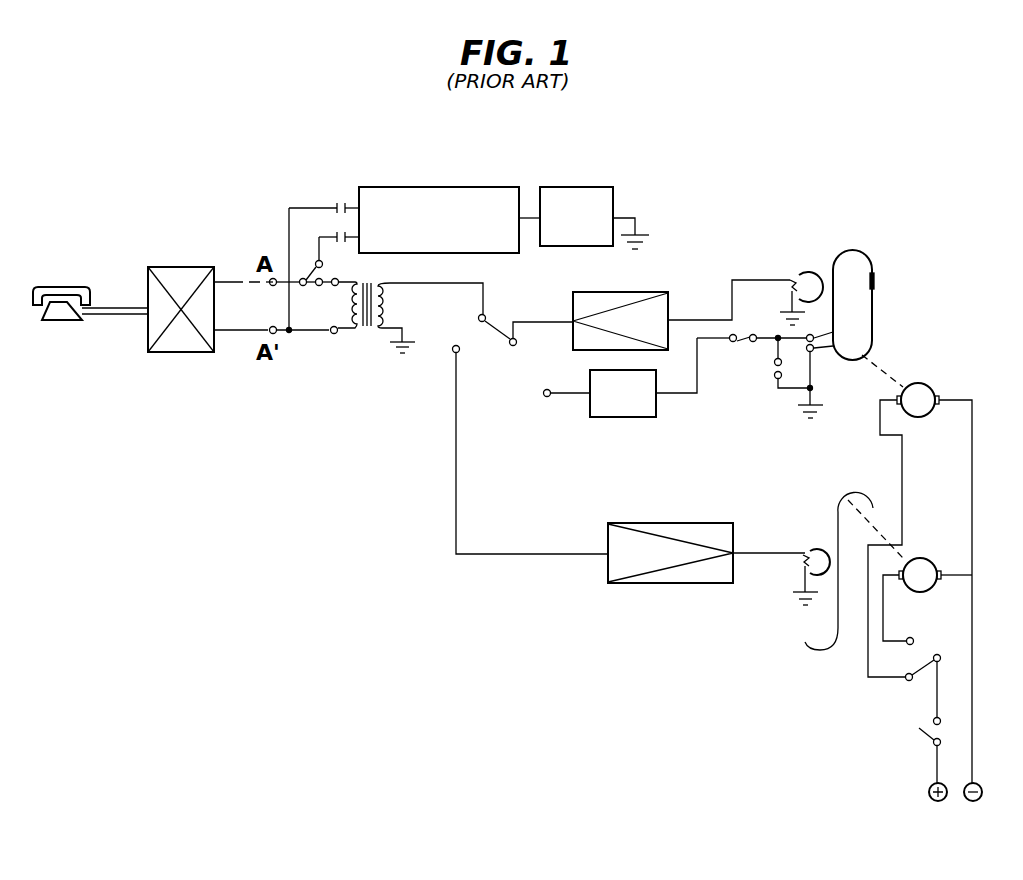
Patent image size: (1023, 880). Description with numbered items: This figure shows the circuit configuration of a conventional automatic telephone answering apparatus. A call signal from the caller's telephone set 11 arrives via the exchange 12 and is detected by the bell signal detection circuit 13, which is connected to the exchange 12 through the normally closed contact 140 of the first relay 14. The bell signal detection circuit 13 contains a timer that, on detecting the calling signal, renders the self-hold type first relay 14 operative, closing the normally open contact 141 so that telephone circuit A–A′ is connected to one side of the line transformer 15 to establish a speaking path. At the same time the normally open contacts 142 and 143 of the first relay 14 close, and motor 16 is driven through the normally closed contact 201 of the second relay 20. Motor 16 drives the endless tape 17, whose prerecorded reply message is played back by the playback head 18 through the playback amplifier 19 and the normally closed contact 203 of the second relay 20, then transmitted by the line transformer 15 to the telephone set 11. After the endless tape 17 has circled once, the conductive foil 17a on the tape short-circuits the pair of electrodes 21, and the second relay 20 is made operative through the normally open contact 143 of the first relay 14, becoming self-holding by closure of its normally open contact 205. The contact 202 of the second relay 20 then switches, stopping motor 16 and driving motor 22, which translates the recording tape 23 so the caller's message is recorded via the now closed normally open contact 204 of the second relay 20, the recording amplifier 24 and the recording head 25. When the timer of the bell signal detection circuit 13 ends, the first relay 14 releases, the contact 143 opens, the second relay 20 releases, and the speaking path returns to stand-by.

The caller's telephone set 11 is at (62, 287).
The exchange 12 is at (195, 267).
The bell signal detection circuit 13 is at (483, 187).
The first relay 14 is at (614, 187).
The line transformer 15 is at (370, 332).
The motor 16 is at (945, 355).
The endless tape 17 is at (872, 330).
The conductive foil 17a is at (874, 282).
The playback head 18 is at (808, 272).
The playback amplifier 19 is at (651, 292).
The second relay 20 is at (640, 417).
The pair of electrodes 21 is at (814, 352).
The motor 22 is at (926, 558).
The recording tape 23 is at (822, 648).
The recording amplifier 24 is at (683, 583).
The recording head 25 is at (800, 566).
The normally closed contact 140 is at (316, 259).
The normally open contact 141 is at (320, 287).
The normally open contact 142 is at (946, 735).
The normally open contact 143 is at (733, 343).
The normally closed contact 201 is at (907, 682).
The normally open contact 202 is at (930, 625).
The normally closed contact 203 is at (528, 362).
The normally open contact 204 is at (453, 352).
The normally open contact 205 is at (774, 378).